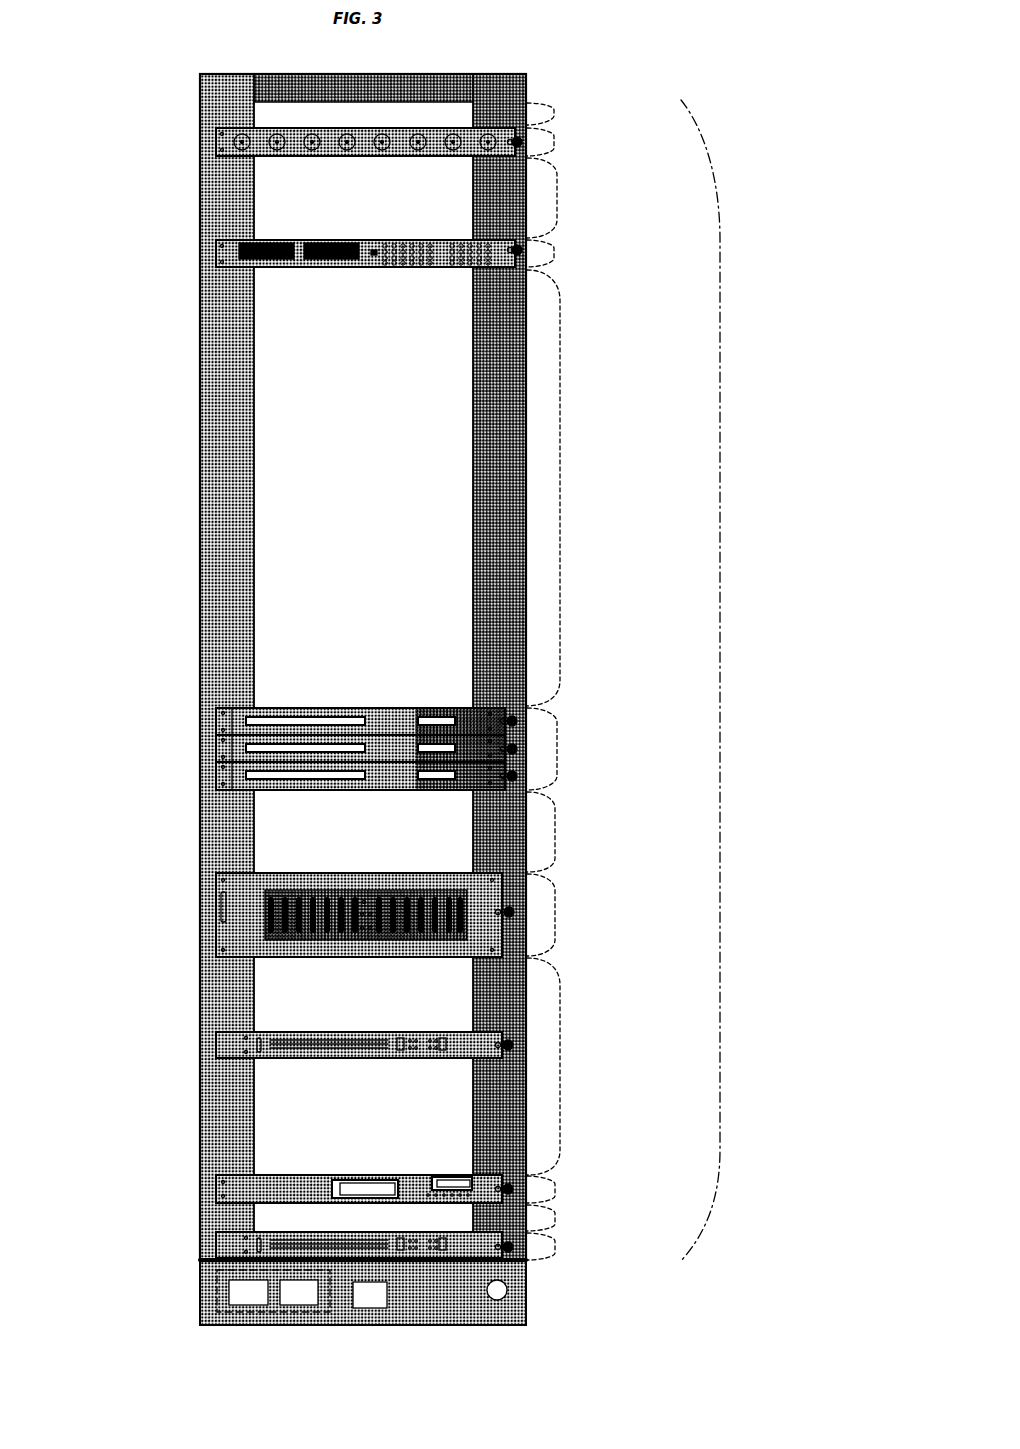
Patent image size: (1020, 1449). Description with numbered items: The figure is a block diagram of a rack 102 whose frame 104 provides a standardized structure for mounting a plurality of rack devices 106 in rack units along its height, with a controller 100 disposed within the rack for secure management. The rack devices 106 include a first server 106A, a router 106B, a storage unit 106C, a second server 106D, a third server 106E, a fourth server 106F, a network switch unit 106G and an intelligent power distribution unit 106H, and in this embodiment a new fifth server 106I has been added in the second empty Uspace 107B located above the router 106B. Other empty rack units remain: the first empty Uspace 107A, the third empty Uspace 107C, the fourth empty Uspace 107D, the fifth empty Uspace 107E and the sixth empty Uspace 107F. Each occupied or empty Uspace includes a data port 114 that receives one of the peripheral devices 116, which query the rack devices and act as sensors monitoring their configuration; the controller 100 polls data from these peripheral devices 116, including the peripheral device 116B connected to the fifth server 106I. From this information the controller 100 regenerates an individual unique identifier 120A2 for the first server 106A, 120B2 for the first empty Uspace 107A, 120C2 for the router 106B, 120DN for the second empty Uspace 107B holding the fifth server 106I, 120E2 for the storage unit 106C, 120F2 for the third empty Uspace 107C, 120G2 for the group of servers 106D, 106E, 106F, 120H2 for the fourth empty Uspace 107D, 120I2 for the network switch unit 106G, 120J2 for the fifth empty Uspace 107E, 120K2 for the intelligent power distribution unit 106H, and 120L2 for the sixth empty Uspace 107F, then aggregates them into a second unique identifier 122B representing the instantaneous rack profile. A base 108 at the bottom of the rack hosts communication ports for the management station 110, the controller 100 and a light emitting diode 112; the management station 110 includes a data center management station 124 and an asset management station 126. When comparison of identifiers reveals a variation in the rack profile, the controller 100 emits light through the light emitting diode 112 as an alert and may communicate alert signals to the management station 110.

The controller 100 is at (362, 1324).
The rack 102 is at (160, 523).
The frame 104 is at (225, 600).
The rack devices 106 is at (334, 159).
The first server 106A is at (216, 1234).
The router 106B is at (216, 1178).
The storage unit 106C is at (216, 930).
The second server 106D is at (216, 780).
The third server 106E is at (216, 746).
The fourth server 106F is at (216, 711).
The network switch unit 106G is at (216, 247).
The intelligent power distribution unit 106H is at (216, 142).
The fifth server 106I is at (216, 1035).
The first empty Uspace 107A is at (555, 1218).
The second empty Uspace 107B is at (560, 1066).
The third empty Uspace 107C is at (555, 832).
The fourth empty Uspace 107D is at (560, 487).
The fifth empty Uspace 107E is at (557, 195).
The sixth empty Uspace 107F is at (554, 113).
The base 108 is at (200, 1280).
The management station 110 is at (278, 1312).
The light emitting diode 112 is at (508, 1292).
The data port 114 is at (517, 135).
The peripheral devices 116 is at (517, 150).
The peripheral device 116B is at (510, 1053).
The individual unique identifier 120A2 is at (555, 1247).
The individual unique identifier 120B2 is at (660, 1218).
The individual unique identifier 120C2 is at (555, 1190).
The individual unique identifier 120DN is at (669, 1066).
The individual unique identifier 120E2 is at (555, 914).
The individual unique identifier 120F2 is at (659, 832).
The individual unique identifier 120G2 is at (557, 748).
The individual unique identifier 120H2 is at (668, 487).
The individual unique identifier 120I2 is at (554, 250).
The individual unique identifier 120J2 is at (657, 195).
The individual unique identifier 120K2 is at (554, 142).
The individual unique identifier 120L2 is at (659, 113).
The second unique identifier 122B is at (720, 680).
The data center management station 124 is at (237, 1305).
The asset management station 126 is at (300, 1305).